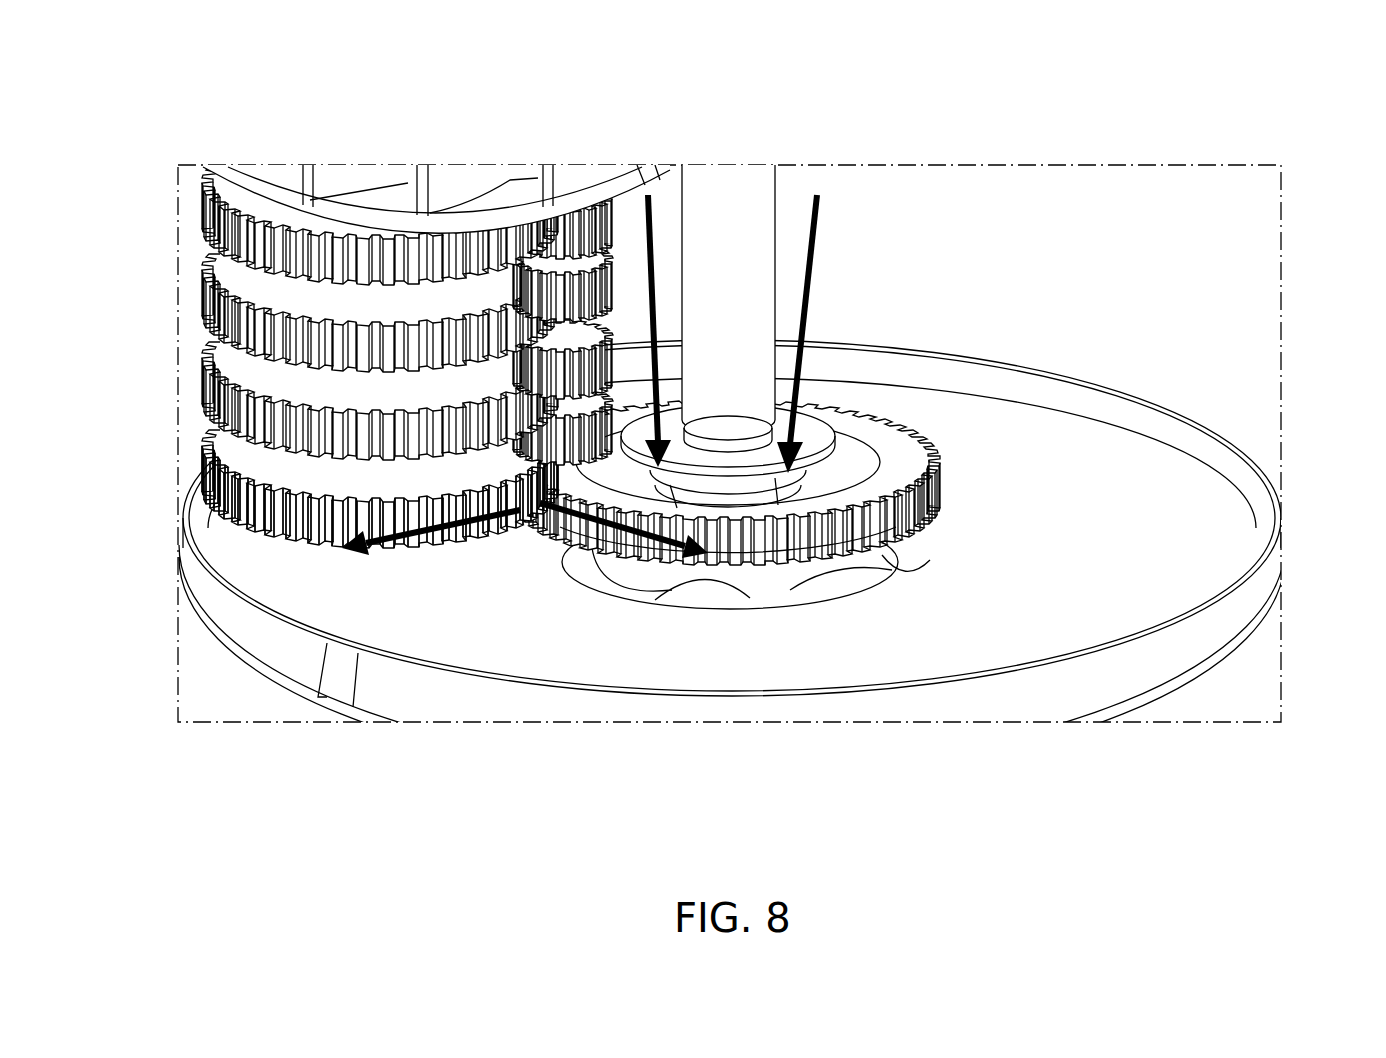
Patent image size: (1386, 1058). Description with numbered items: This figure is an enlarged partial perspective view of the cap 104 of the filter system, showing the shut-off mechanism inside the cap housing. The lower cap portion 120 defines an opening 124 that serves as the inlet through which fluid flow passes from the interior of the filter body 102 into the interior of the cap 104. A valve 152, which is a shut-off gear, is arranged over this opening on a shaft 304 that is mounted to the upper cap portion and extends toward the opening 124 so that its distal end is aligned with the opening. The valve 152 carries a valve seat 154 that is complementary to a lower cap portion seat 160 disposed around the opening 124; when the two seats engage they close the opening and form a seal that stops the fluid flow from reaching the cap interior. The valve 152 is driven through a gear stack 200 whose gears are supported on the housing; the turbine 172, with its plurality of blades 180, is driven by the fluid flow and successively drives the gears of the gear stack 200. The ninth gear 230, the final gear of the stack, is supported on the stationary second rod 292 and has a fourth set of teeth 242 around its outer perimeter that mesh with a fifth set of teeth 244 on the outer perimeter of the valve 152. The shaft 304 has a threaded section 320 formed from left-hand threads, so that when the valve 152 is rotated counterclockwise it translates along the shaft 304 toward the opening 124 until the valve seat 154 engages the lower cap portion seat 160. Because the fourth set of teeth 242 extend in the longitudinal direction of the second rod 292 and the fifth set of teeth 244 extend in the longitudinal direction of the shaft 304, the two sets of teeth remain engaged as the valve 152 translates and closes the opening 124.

The filter body 102 is at (1247, 690).
The cap 104 is at (1142, 465).
The lower cap portion 120 is at (1178, 522).
The opening 124 is at (837, 560).
The valve 152 is at (888, 442).
The valve seat 154 is at (717, 605).
The lower cap portion seat 160 is at (677, 597).
The turbine 172 is at (496, 185).
The blades 180 is at (465, 178).
The gear stack 200 is at (335, 385).
The ninth gear 230 is at (237, 455).
The fourth set of teeth 242 is at (207, 513).
The fifth set of teeth 244 is at (937, 490).
The second rod 292 is at (372, 462).
The shaft 304 is at (745, 195).
The threaded section 320 is at (724, 427).